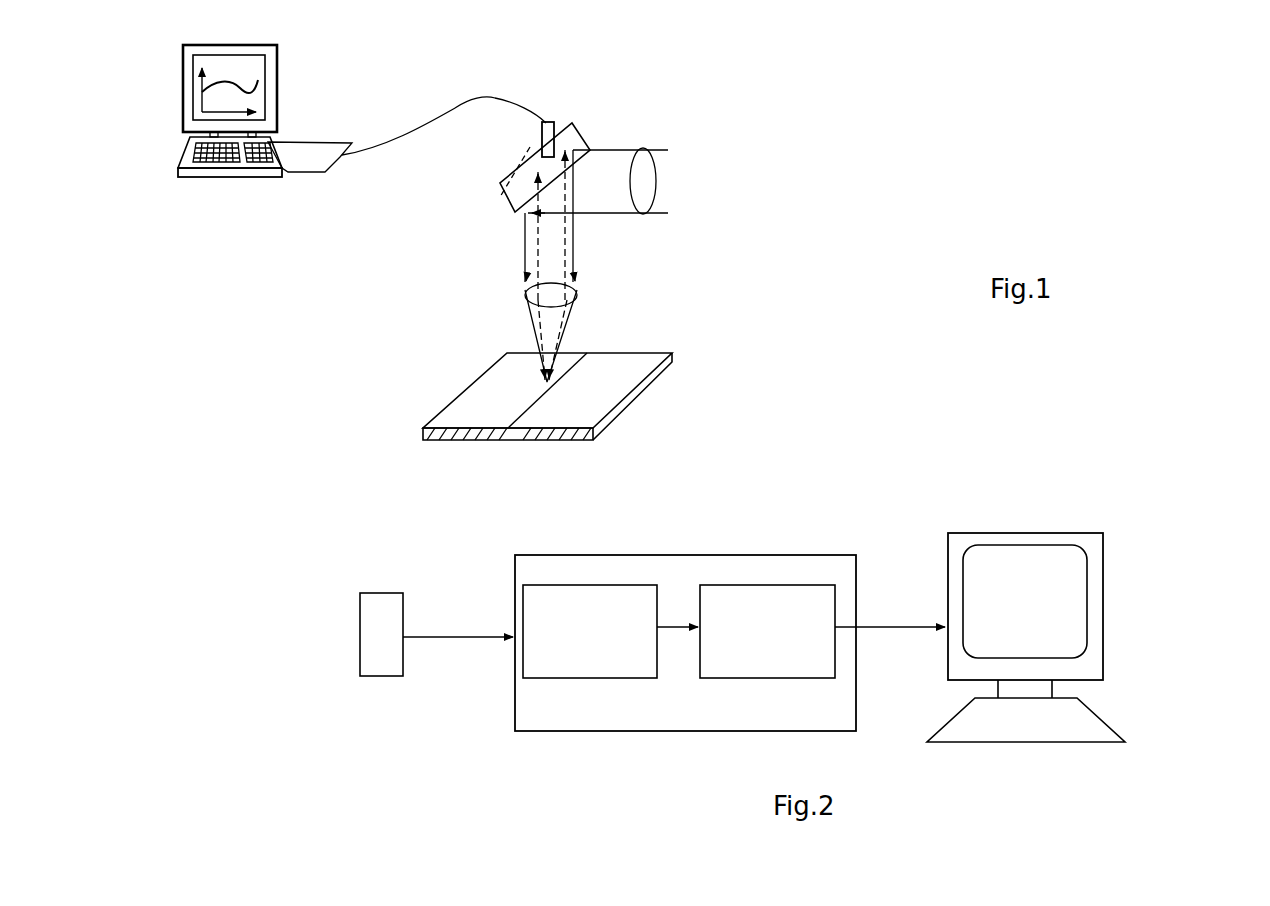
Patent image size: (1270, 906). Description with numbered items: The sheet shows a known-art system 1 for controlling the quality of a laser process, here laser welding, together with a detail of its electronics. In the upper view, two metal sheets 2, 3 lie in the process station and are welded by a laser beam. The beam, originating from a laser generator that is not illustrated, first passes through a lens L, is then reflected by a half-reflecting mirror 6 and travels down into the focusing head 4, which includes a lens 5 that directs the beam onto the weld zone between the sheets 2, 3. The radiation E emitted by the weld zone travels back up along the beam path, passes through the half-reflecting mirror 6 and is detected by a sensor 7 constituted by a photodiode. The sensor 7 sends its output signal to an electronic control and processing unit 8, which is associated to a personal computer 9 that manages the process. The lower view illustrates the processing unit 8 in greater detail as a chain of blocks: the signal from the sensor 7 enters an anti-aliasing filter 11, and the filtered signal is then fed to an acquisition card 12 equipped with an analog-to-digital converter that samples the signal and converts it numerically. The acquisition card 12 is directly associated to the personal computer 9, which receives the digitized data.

In FIG. 1, the system for the control of the quality of a laser process 1 is at (717, 105).
In FIG. 1, the metal sheet 2 is at (462, 406).
In FIG. 1, the metal sheet 3 is at (600, 400).
In FIG. 1, the focusing head 4 is at (598, 245).
In FIG. 1, the lens 5 is at (552, 296).
In FIG. 1, the half-reflecting mirror 6 is at (500, 206).
In FIG. 1, the sensor 7 is at (562, 116).
In FIG. 2, the sensor 7 is at (370, 627).
In FIG. 1, the electronic control and processing unit 8 is at (333, 138).
In FIG. 2, the electronic control and processing unit 8 is at (730, 682).
In FIG. 1, the personal computer 9 is at (284, 72).
In FIG. 2, the personal computer 9 is at (1103, 605).
In FIG. 2, the anti-aliasing filter 11 is at (609, 657).
In FIG. 2, the acquisition card 12 is at (783, 660).
In FIG. 1, the radiation emitted by the weld zone E is at (538, 262).
In FIG. 1, the lens L is at (650, 170).